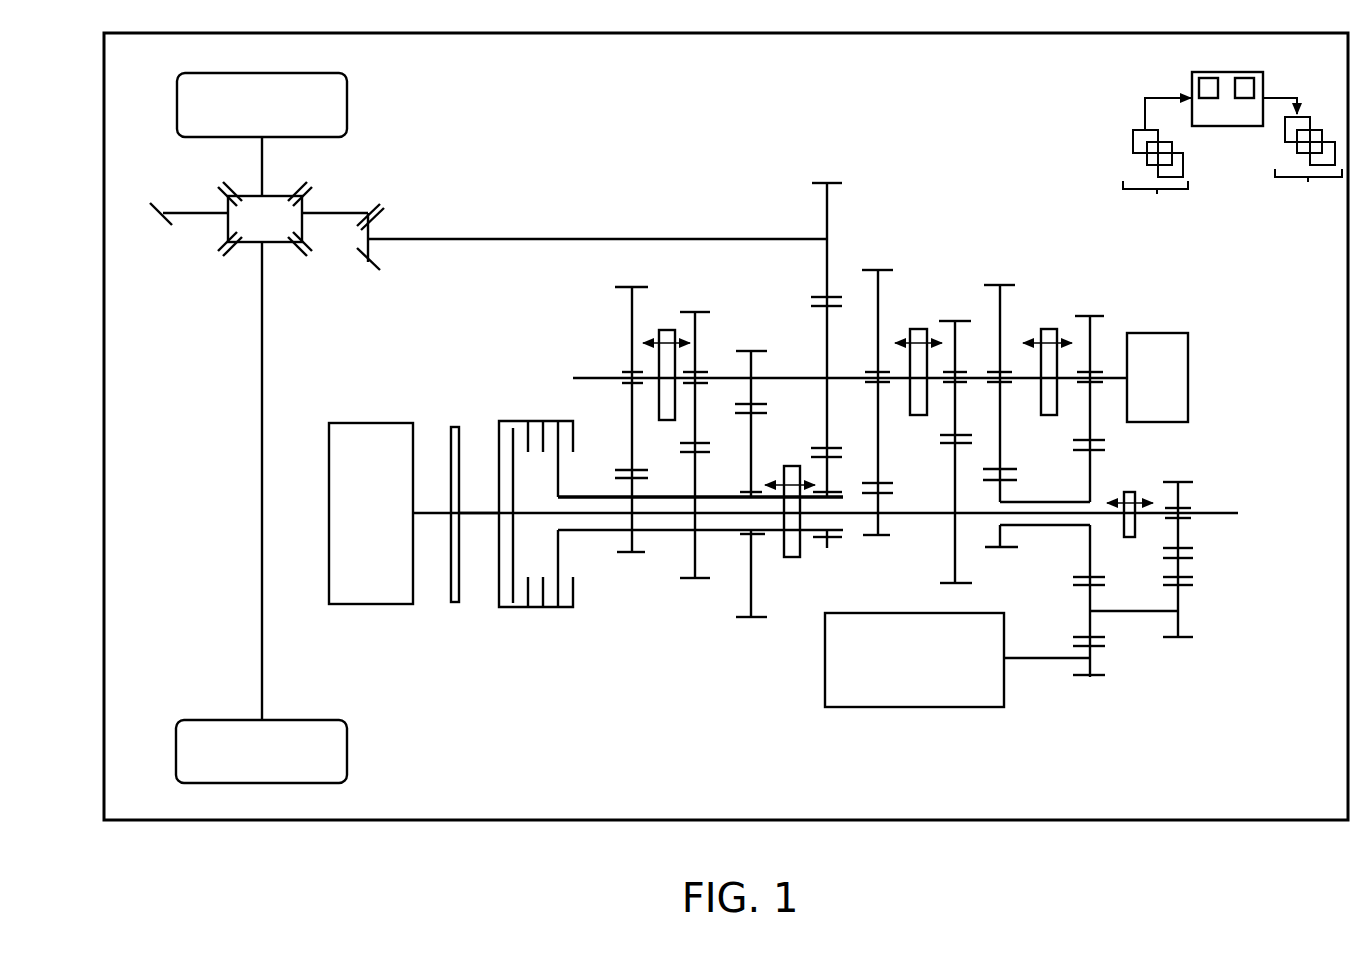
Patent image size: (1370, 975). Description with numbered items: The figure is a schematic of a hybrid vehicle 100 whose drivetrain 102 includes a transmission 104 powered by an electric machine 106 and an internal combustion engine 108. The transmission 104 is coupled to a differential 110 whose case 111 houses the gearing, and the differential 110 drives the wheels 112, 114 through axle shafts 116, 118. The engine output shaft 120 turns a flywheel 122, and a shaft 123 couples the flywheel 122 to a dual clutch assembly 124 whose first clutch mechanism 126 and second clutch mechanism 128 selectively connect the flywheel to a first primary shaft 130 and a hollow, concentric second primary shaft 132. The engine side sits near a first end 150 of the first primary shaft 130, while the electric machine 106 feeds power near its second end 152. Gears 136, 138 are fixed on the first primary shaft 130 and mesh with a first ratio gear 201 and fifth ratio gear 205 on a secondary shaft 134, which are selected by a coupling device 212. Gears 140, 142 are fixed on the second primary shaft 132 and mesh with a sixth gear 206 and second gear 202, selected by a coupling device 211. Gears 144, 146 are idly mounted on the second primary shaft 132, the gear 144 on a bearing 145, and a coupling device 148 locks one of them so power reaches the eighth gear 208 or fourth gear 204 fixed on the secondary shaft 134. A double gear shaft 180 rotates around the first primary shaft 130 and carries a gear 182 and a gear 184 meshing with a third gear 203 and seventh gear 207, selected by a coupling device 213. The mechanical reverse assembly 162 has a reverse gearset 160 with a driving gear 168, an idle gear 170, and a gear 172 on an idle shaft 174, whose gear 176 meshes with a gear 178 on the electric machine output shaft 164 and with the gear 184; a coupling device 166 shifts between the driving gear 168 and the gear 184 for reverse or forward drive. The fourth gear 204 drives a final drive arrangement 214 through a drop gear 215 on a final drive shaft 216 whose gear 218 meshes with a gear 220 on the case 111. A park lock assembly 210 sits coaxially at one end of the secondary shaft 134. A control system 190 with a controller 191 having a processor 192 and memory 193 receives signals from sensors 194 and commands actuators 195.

The vehicle 100 is at (726, 426).
The drivetrain 102 is at (708, 97).
The transmission 104 is at (706, 710).
The electric machine 106 is at (914, 660).
The internal combustion engine 108 is at (371, 513).
The differential 110 is at (195, 263).
The case 111 is at (282, 245).
The drive wheel 112 is at (347, 746).
The drive wheel 114 is at (347, 100).
The axle shaft 116 is at (262, 673).
The axle shaft 118 is at (262, 151).
The output shaft 120 is at (428, 510).
The flywheel 122 is at (454, 603).
The shaft 123 is at (478, 510).
The dual clutch assembly 124 is at (529, 393).
The first clutch mechanism 126 is at (513, 609).
The second clutch mechanism 128 is at (556, 609).
The first primary shaft 130 is at (1220, 513).
The second primary shaft 132 is at (575, 492).
The secondary shaft 134 is at (580, 377).
The gear 136 is at (882, 536).
The gear 138 is at (950, 446).
The gear 140 is at (695, 580).
The gear 142 is at (640, 555).
The gear 144 is at (748, 620).
The bearing 145 is at (746, 535).
The gear 146 is at (832, 550).
The coupling device 148 is at (793, 560).
The first end 150 is at (542, 517).
The second end 152 is at (1296, 426).
The reverse gearset 160 is at (1202, 683).
The mechanical reverse assembly 162 is at (1290, 531).
The output shaft 164 is at (1050, 660).
The coupling device 166 is at (1130, 492).
The driving gear 168 is at (1188, 483).
The idle gear 170 is at (1193, 553).
The gear 172 is at (1190, 638).
The idle shaft 174 is at (1163, 611).
The gear 176 is at (1080, 633).
The gear 178 is at (1098, 677).
The double gear shaft 180 is at (1030, 527).
The gear 182 is at (992, 549).
The gear 184 is at (1090, 451).
The control system 190 is at (1122, 80).
The controller 191 is at (1213, 72).
The processor 192 is at (1199, 88).
The memory 193 is at (1254, 88).
The sensors 194 is at (1155, 173).
The actuators 195 is at (1308, 164).
The first ratio gear 201 is at (888, 270).
The second gear 202 is at (620, 287).
The third gear 203 is at (1003, 283).
The fourth gear 204 is at (810, 300).
The fifth ratio gear 205 is at (957, 320).
The sixth gear 206 is at (705, 312).
The seventh gear 207 is at (1095, 315).
The eighth gear 208 is at (765, 352).
The park lock assembly 210 is at (1157, 377).
The coupling device 211 is at (667, 330).
The coupling device 212 is at (917, 327).
The coupling device 213 is at (1048, 327).
The final drive arrangement 214 is at (597, 165).
The drop gear 215 is at (822, 183).
The final drive shaft 216 is at (505, 237).
The gear 218 is at (382, 273).
The gear 220 is at (374, 204).